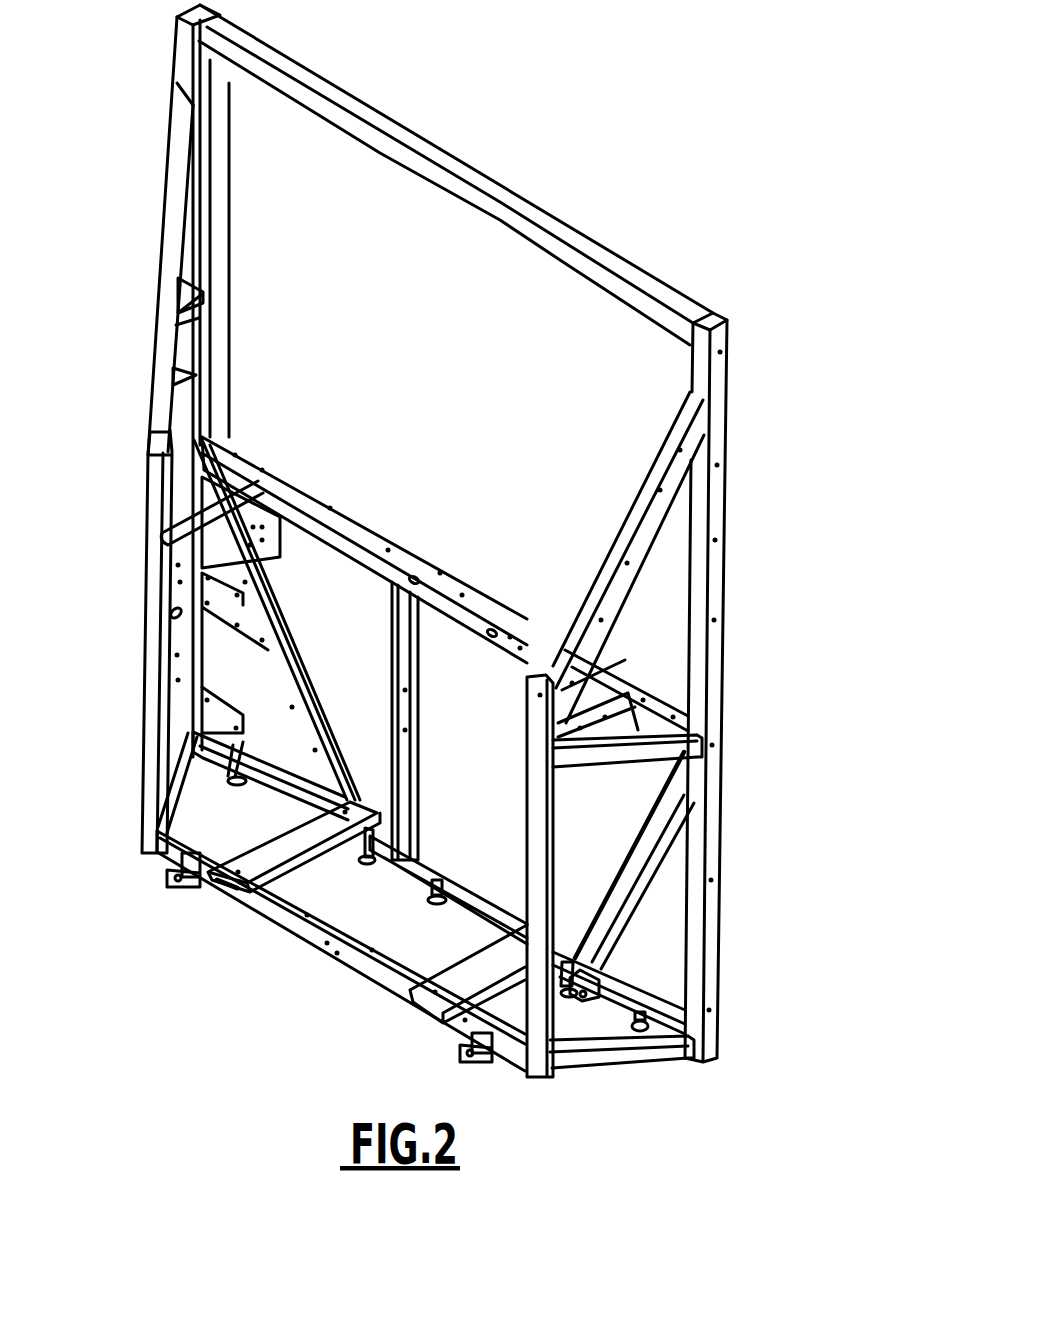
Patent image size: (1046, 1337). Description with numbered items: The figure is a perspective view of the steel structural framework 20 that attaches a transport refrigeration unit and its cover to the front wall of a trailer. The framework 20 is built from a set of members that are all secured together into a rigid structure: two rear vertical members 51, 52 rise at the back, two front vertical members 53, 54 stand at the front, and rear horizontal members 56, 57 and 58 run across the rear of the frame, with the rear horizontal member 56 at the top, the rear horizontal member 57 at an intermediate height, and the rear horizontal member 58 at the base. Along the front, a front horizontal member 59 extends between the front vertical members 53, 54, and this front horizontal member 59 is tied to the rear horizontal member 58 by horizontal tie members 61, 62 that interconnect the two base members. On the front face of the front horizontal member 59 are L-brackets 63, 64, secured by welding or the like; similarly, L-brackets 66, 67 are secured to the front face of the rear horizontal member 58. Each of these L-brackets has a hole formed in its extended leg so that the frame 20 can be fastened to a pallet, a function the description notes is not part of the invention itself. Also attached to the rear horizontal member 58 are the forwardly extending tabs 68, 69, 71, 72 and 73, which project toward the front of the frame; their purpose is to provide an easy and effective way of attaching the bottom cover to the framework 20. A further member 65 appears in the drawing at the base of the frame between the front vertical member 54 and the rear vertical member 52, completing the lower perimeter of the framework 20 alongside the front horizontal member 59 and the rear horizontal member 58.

The structural framework 20 is at (460, 567).
The rear vertical member 51 is at (222, 230).
The rear vertical member 52 is at (727, 468).
The front vertical member 53 is at (148, 678).
The front vertical member 54 is at (545, 810).
The rear horizontal member 56 is at (552, 235).
The rear horizontal member 57 is at (375, 540).
The rear horizontal member 58 is at (433, 860).
The front horizontal member 59 is at (333, 956).
The horizontal tie member 61 is at (268, 850).
The horizontal tie member 62 is at (457, 972).
The L-bracket 63 is at (170, 870).
The L-bracket 64 is at (473, 1060).
The right base rail 65 is at (625, 1057).
The L-bracket 66 is at (310, 708).
The L-bracket 67 is at (608, 958).
The forwardly extending tab 68 is at (237, 772).
The forwardly extending tab 69 is at (410, 796).
The forwardly extending tab 71 is at (448, 876).
The forwardly extending tab 72 is at (572, 958).
The forwardly extending tab 73 is at (645, 1018).